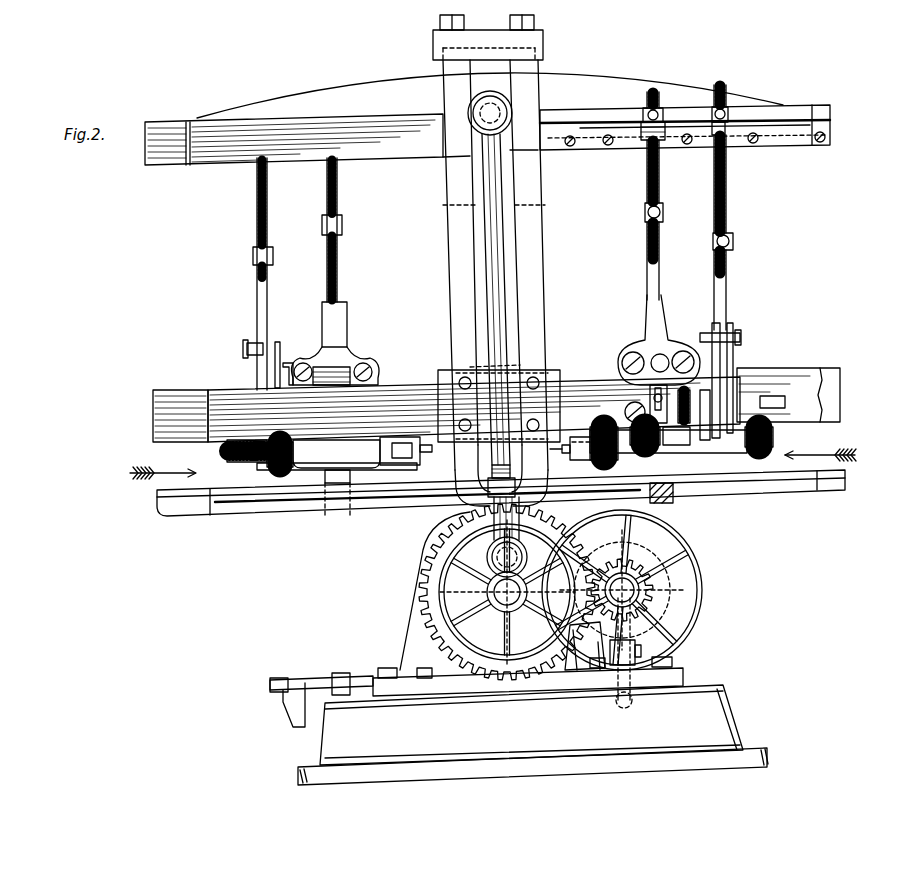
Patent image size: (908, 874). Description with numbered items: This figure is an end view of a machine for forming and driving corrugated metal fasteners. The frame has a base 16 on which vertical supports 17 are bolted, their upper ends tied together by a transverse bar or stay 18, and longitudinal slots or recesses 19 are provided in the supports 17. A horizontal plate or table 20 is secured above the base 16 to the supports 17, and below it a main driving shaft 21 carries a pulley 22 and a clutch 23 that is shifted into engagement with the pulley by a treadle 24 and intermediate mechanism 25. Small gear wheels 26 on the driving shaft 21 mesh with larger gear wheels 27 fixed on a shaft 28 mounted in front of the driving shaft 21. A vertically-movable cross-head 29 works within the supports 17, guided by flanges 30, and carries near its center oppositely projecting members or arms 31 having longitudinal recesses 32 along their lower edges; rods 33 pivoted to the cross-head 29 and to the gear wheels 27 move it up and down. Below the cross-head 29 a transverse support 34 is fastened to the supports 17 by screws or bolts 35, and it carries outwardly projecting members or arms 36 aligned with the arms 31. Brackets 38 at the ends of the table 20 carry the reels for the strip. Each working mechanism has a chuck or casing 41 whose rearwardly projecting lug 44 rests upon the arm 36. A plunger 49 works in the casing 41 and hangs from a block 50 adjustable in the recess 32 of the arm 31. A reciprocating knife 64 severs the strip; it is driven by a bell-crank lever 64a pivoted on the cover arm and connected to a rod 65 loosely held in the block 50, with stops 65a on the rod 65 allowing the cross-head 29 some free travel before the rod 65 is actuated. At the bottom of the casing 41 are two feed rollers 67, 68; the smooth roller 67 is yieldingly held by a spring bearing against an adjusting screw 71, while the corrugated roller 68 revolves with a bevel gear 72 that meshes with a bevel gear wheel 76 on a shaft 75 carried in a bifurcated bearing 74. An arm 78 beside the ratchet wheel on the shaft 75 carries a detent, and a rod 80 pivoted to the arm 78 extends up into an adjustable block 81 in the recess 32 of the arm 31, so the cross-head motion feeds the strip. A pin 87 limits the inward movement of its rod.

The base 16 is at (533, 721).
The vertical supports 17 is at (495, 283).
The transverse bar or stay 18 is at (476, 44).
The longitudinal slots or recesses 19 is at (445, 206).
The horizontal plate or table 20 is at (385, 489).
The main driving shaft 21 is at (622, 590).
The pulley 22 is at (700, 575).
The clutch 23 is at (655, 555).
The treadle 24 is at (290, 705).
The intermediate mechanism 25 is at (642, 646).
The small gear wheels 26 is at (569, 550).
The larger gear wheels 27 is at (420, 578).
The shaft 28 is at (507, 592).
The vertically-movable cross-head 29 is at (490, 108).
The flanges 30 is at (490, 143).
The members or arms 31 is at (487, 119).
The longitudinal recesses 32 is at (775, 125).
The rods 33 is at (505, 318).
The transverse support 34 is at (520, 365).
The screws or bolts 35 is at (458, 375).
The members or arms 36 is at (153, 414).
The brackets 38 is at (333, 502).
The chuck or casing 41 is at (352, 350).
The rearwardly projecting lug 44 is at (313, 372).
The plunger 49 is at (340, 258).
The block 50 is at (645, 148).
The reciprocating knife 64 is at (773, 438).
The bell-crank lever 64a is at (704, 350).
The rod 65 is at (661, 260).
The stops 65a is at (664, 213).
The feed roller 67 is at (606, 448).
The feed roller 68 is at (650, 445).
The adjusting screw 71 is at (567, 457).
The bevel gear 72 is at (683, 445).
The bifurcated bearing 74 is at (717, 440).
The shaft 75 is at (770, 378).
The bevel gear wheel 76 is at (657, 399).
The arm 78 is at (735, 380).
The rod 80 is at (728, 257).
The adjustable block 81 is at (711, 146).
The pin 87 is at (570, 448).